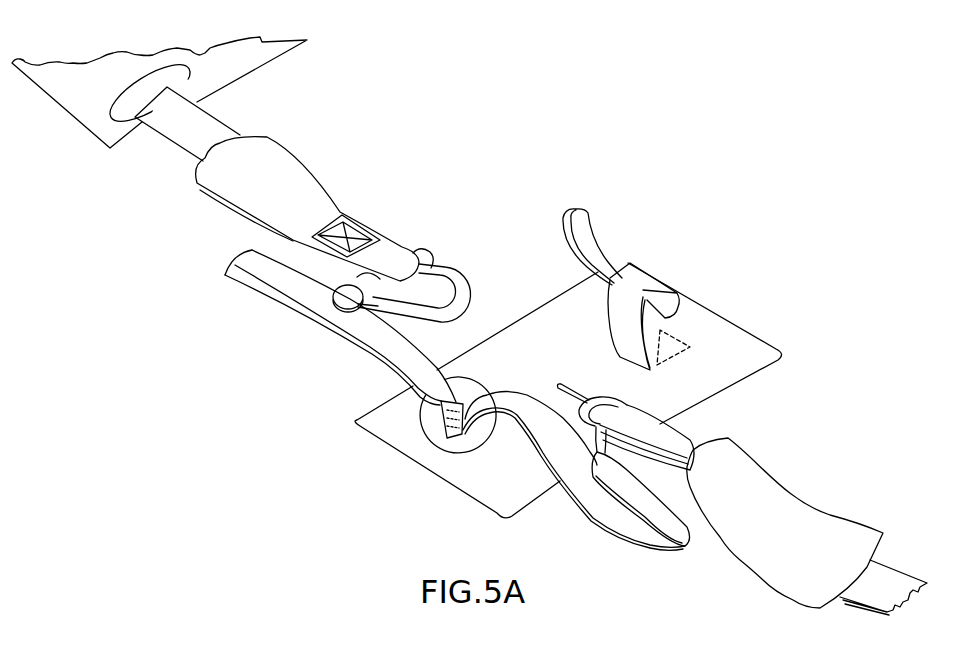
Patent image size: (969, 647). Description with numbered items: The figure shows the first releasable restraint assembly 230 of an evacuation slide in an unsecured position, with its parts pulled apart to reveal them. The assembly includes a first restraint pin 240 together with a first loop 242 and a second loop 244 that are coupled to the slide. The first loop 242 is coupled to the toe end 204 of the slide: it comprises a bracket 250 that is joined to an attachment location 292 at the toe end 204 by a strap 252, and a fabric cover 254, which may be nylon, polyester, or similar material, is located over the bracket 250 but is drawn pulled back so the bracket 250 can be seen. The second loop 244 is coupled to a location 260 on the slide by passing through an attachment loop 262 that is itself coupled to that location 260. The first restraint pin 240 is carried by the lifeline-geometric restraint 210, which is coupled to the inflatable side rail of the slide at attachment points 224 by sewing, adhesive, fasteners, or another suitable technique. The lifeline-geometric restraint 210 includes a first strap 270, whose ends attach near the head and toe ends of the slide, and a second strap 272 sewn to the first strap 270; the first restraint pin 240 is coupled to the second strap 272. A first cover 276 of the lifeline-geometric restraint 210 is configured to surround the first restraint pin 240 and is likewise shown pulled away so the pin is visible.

The toe end 204 is at (247, 52).
The attachment location 292 is at (115, 102).
The strap 252 is at (188, 123).
The cover 254 is at (252, 185).
The first loop 242 is at (366, 179).
The bracket 250 is at (428, 271).
The first releasable restraint assembly 230 is at (549, 107).
The attachment points 224 is at (452, 427).
The second loop 244 is at (600, 253).
The attachment loop 262 is at (623, 320).
The location 260 is at (672, 343).
The first restraint pin 240 is at (598, 408).
The first strap 270 is at (893, 580).
The second strap 272 is at (687, 442).
The first cover 276 is at (802, 527).
The lifeline-geometric restraint 210 is at (871, 431).